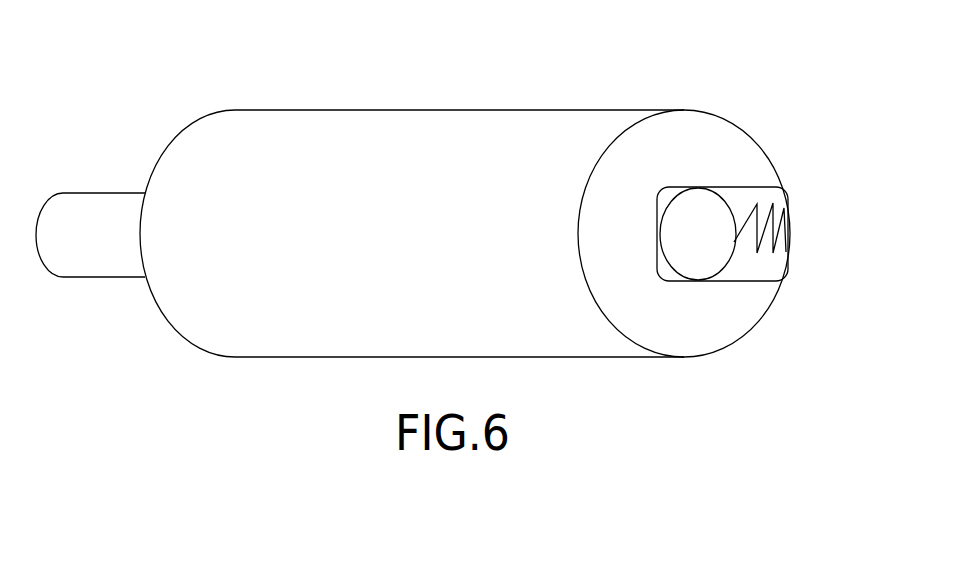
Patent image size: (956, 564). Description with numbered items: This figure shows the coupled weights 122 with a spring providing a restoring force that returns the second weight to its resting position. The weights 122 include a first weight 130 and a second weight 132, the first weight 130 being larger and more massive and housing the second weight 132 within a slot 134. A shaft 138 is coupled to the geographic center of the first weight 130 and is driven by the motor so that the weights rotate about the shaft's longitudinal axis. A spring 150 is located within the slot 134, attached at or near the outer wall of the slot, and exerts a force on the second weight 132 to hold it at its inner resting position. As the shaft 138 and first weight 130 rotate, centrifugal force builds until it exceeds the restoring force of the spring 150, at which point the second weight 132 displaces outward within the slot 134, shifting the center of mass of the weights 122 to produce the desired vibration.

The weights 122 is at (585, 51).
The first weight 130 is at (388, 220).
The shaft 138 is at (80, 254).
The slot 134 is at (779, 190).
The second weight 132 is at (683, 236).
The spring 150 is at (785, 244).